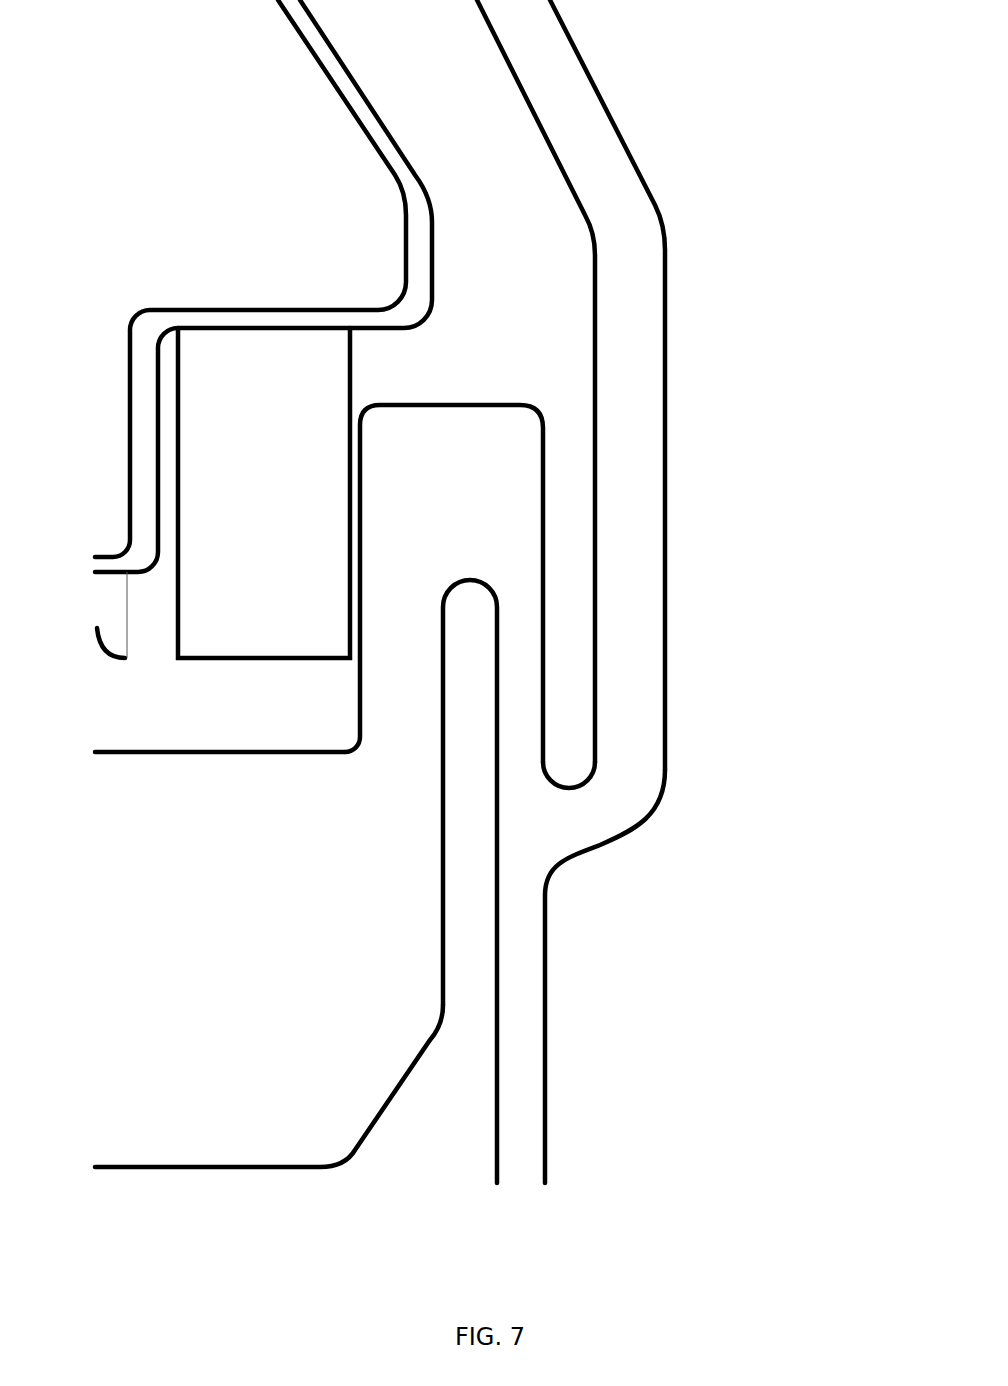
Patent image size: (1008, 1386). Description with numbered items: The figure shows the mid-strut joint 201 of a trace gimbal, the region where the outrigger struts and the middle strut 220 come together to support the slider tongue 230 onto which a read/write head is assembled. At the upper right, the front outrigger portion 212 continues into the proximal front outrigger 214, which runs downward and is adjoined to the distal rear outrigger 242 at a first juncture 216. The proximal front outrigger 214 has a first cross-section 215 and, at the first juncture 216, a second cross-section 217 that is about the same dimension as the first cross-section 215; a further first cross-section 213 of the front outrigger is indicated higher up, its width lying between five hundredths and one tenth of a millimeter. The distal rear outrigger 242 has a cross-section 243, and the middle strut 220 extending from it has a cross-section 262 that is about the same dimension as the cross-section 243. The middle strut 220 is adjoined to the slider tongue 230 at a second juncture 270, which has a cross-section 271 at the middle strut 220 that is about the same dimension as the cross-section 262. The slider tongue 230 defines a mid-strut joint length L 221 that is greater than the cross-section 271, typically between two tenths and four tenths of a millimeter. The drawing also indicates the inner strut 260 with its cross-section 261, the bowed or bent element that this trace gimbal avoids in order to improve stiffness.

The mid-strut joint 201 is at (405, 378).
The first wall portion 212 is at (630, 147).
The first cross-section 213 is at (597, 92).
The proximal front outrigger 214 is at (678, 703).
The first cross-section 215 is at (597, 637).
The first juncture 216 is at (573, 823).
The second cross-section 217 is at (642, 812).
The middle strut 220 is at (545, 640).
The mid-strut joint length L 221 is at (465, 407).
The slider tongue 230 is at (208, 1093).
The distal rear outrigger 242 is at (525, 1050).
The cross-section 243 is at (497, 977).
The inner strut 260 is at (405, 745).
The cross-section 261 is at (362, 668).
The cross-section 262 is at (541, 692).
The second juncture 270 is at (508, 480).
The cross-section 271 is at (537, 572).